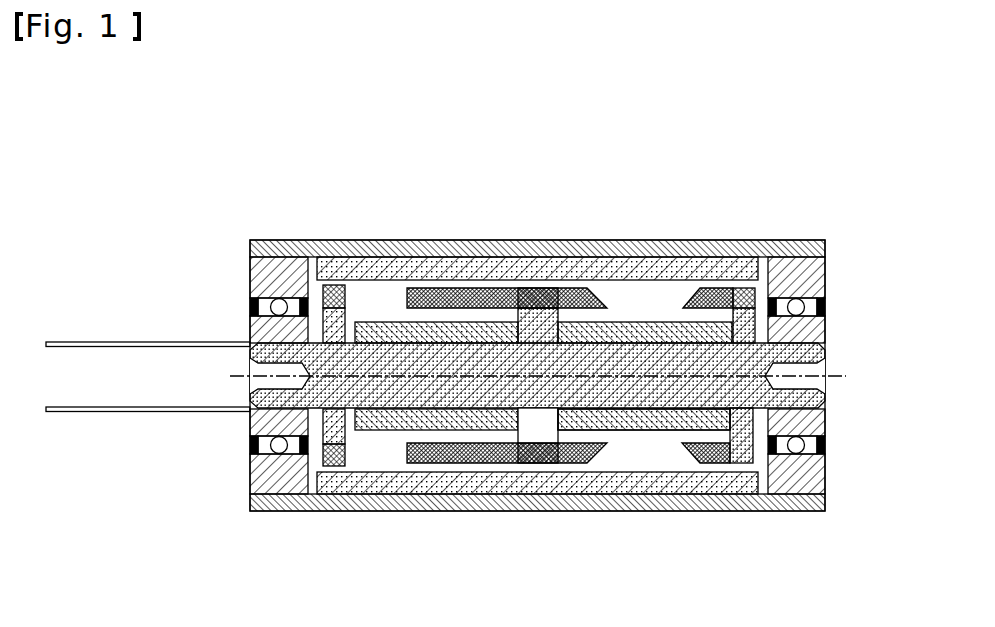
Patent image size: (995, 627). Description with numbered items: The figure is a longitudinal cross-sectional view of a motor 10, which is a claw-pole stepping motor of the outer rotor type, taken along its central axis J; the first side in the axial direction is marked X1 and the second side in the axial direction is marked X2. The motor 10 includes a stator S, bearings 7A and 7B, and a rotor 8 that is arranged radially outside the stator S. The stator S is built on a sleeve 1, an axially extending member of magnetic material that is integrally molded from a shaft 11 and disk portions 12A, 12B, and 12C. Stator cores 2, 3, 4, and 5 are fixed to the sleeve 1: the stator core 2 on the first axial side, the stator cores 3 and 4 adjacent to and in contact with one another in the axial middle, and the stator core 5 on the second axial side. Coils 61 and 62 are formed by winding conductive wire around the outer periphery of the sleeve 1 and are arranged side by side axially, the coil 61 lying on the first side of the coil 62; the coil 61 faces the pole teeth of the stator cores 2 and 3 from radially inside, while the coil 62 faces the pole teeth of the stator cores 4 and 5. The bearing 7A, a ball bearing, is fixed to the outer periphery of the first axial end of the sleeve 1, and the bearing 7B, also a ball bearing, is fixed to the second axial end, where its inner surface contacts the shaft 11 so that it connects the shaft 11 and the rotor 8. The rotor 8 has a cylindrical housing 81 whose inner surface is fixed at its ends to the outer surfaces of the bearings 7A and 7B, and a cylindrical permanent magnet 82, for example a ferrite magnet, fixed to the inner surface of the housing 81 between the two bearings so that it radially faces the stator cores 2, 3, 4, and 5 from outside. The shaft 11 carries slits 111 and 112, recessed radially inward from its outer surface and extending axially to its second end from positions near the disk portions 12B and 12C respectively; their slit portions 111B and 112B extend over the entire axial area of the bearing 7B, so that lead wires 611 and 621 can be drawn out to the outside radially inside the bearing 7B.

The sleeve 1 is at (667, 170).
The stator core 2 is at (740, 456).
The stator core 3 is at (578, 405).
The stator core 4 is at (457, 464).
The stator core 5 is at (333, 467).
The bearing 7A is at (810, 477).
The bearing 7B is at (258, 485).
The rotor 8 is at (537, 337).
The housing 81 is at (370, 256).
The magnet 82 is at (347, 267).
The motor 10 is at (756, 134).
The shaft 11 is at (625, 355).
The disk portion 12A is at (702, 298).
The disk portion 12B is at (537, 318).
The disk portion 12C is at (348, 310).
The coil 61 is at (637, 431).
The coil 62 is at (373, 423).
The slit 111 is at (585, 413).
The slit 112 is at (350, 341).
The slit portion 111B is at (254, 427).
The slit portion 112B is at (255, 327).
The lead wire 611 is at (83, 412).
The lead wire 621 is at (90, 341).
The stator S is at (660, 434).
The central axis J is at (844, 376).
The first side in the axial direction X1 is at (757, 591).
The second side in the axial direction X2 is at (757, 591).